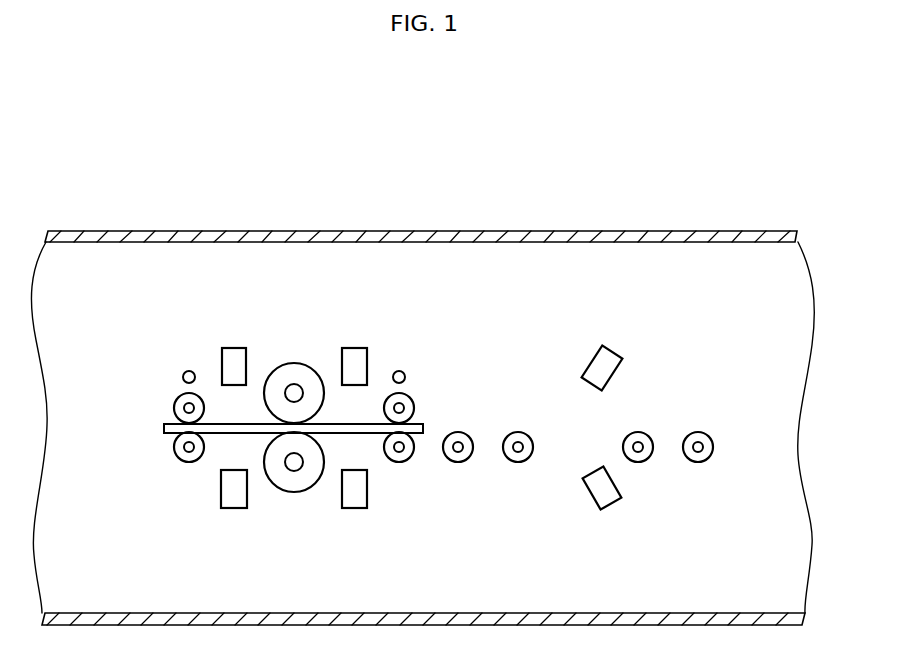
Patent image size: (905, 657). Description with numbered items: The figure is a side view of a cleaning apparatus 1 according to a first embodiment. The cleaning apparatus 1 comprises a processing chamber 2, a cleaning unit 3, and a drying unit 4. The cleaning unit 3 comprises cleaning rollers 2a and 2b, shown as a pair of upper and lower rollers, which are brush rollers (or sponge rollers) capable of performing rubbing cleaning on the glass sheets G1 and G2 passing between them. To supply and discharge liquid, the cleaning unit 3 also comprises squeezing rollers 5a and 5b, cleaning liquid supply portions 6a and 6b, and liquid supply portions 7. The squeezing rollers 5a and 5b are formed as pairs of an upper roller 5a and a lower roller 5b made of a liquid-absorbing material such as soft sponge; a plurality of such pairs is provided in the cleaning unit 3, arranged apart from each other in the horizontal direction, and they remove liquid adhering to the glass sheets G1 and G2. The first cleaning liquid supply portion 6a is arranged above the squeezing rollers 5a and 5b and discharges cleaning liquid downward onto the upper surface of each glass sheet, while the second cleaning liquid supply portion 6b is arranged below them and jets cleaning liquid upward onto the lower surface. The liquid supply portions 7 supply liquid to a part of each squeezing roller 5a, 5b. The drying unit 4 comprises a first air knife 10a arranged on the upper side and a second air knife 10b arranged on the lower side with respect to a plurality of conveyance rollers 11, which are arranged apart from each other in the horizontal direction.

The cleaning apparatus 1 is at (555, 196).
The processing chamber 2 is at (441, 231).
The cleaning unit 3 is at (267, 281).
The drying unit 4 is at (614, 281).
The cleaning roller 2a is at (294, 363).
The cleaning roller 2b is at (294, 492).
The upper roller 5a is at (176, 400).
The lower roller 5b is at (188, 463).
The first cleaning liquid supply portion 6a is at (232, 348).
The second cleaning liquid supply portion 6b is at (233, 508).
The liquid supply portion 7 is at (189, 371).
The first air knife 10a is at (588, 364).
The second air knife 10b is at (587, 497).
The conveyance roller 11 is at (458, 463).
The glass sheet G1 is at (340, 415).
The glass sheet G2 is at (424, 426).